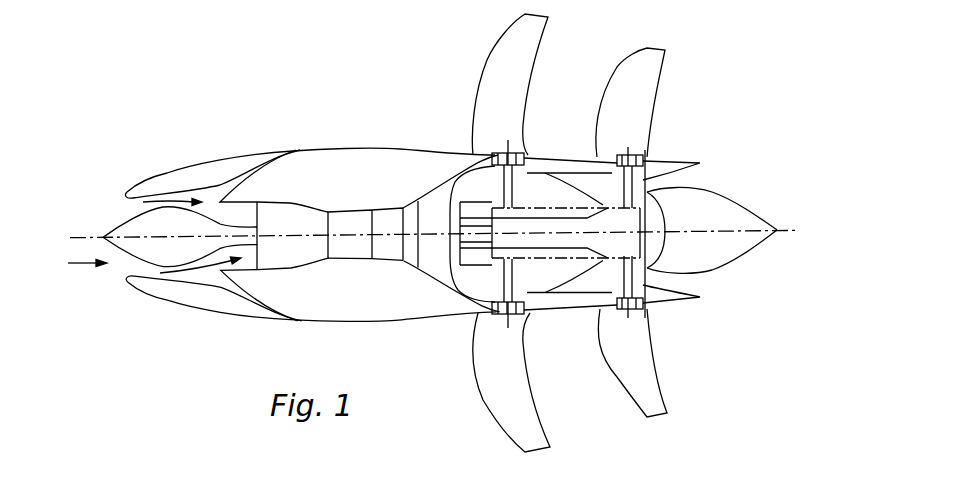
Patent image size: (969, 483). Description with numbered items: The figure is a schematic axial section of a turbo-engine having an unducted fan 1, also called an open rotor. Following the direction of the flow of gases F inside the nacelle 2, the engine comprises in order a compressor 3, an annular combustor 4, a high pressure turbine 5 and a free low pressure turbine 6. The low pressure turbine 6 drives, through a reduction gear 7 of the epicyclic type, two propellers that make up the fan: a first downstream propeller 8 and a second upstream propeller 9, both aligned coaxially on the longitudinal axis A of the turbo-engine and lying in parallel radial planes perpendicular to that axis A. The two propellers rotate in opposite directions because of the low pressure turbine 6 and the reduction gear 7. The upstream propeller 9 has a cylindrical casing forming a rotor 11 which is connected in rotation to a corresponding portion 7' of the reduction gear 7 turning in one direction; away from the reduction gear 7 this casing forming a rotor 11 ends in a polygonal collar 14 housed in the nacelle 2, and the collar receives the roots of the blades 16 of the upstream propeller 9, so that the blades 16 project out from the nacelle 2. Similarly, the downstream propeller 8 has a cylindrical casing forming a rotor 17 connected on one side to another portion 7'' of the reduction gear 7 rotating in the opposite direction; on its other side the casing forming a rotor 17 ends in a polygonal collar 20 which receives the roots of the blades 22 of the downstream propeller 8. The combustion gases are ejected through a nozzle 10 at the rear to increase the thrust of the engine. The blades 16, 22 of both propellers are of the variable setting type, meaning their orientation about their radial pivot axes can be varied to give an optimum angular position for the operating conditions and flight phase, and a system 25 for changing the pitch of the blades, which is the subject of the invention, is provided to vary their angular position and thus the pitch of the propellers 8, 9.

The unducted fan 1 is at (226, 134).
The nacelle 2 is at (340, 148).
The compressor 3 is at (300, 243).
The annular combustor 4 is at (358, 243).
The high pressure turbine 5 is at (408, 243).
The free low pressure turbine 6 is at (440, 243).
The reduction gear 7 is at (425, 200).
The portion of the reduction gear 7' is at (459, 153).
The another portion of the reduction gear 7'' is at (458, 307).
The downstream propeller 8 is at (686, 336).
The upstream propeller 9 is at (462, 348).
The nozzle 10 is at (762, 195).
The casing forming a rotor 11 is at (541, 161).
The polygonal collar 14 is at (488, 163).
The blades 16 is at (508, 48).
The casing forming a rotor 17 is at (605, 262).
The polygonal collar 20 is at (648, 165).
The blades 22 is at (645, 77).
The system for changing the pitch of the blades 25 is at (558, 196).
The longitudinal axis A is at (87, 237).
The direction of the flow of gases F is at (82, 263).